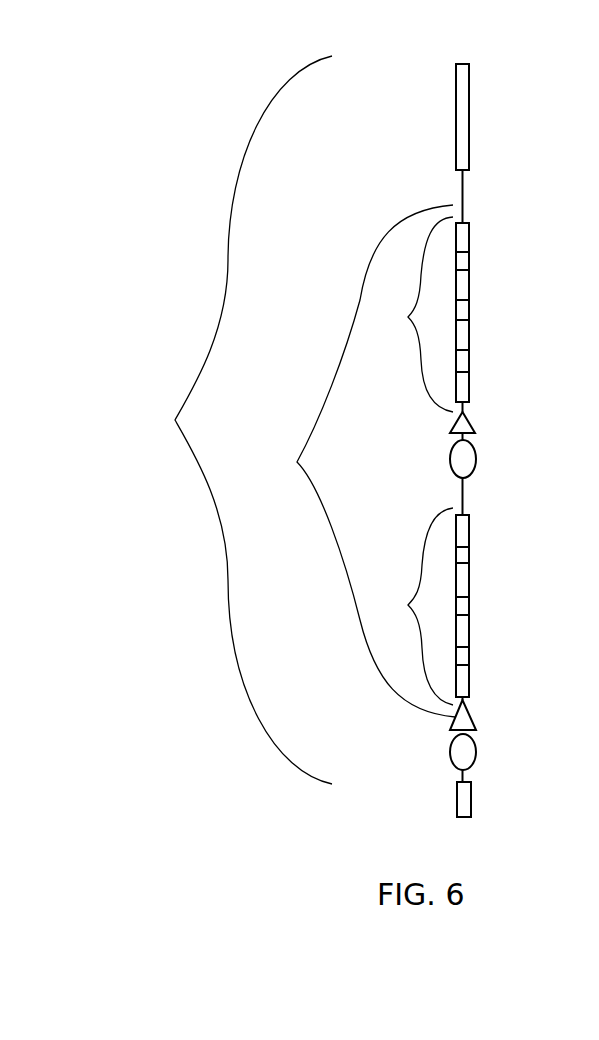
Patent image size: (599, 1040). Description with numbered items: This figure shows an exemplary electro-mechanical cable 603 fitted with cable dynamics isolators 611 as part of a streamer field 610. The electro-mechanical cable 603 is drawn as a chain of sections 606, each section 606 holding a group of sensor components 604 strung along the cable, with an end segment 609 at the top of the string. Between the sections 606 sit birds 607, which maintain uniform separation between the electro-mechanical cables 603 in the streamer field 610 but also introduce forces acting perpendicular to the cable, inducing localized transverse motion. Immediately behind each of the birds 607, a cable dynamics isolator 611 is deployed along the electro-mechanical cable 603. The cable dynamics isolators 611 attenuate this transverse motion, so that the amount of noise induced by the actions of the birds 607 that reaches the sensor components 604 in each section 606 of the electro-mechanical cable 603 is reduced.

The electro-mechanical cable 603 is at (351, 461).
The sensor components 604 is at (470, 237).
The section 606 is at (410, 461).
The birds 607 is at (474, 423).
The end segment 609 is at (472, 135).
The streamer field 610 is at (229, 420).
The cable dynamics isolators 611 is at (477, 460).